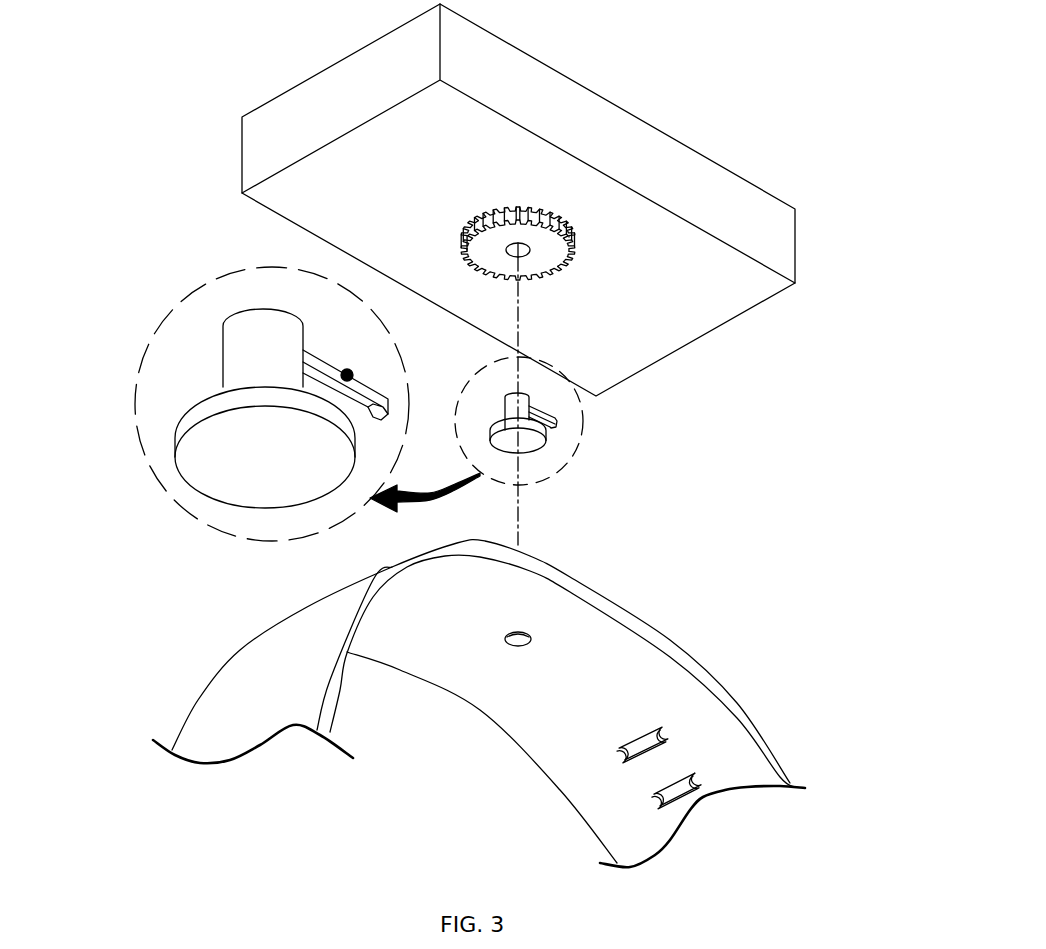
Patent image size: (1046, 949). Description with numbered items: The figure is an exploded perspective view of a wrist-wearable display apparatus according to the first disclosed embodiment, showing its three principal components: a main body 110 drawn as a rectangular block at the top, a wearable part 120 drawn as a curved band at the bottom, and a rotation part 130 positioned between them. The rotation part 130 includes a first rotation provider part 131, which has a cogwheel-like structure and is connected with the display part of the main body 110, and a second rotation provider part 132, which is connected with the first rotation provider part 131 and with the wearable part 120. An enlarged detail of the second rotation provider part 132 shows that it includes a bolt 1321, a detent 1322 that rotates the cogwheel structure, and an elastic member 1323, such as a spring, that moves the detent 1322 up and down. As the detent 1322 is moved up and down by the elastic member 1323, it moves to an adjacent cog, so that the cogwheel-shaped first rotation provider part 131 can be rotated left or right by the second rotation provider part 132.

The main body 110 is at (659, 120).
The wearable part 120 is at (738, 685).
The rotation part 130 is at (688, 465).
The first rotation provider part 131 is at (559, 253).
The second rotation provider part 132 is at (548, 450).
The bolt 1321 is at (243, 337).
The detent 1322 is at (372, 418).
The elastic member 1323 is at (348, 374).